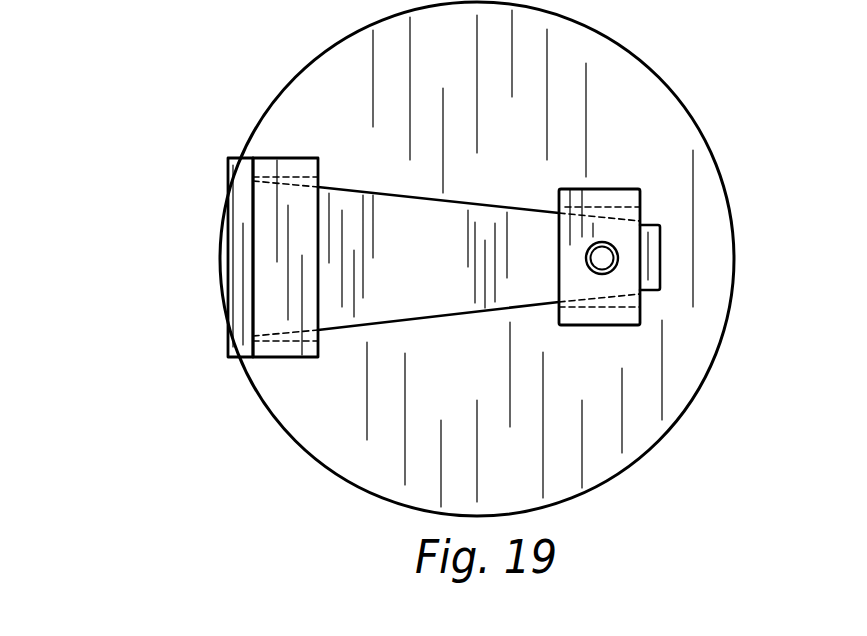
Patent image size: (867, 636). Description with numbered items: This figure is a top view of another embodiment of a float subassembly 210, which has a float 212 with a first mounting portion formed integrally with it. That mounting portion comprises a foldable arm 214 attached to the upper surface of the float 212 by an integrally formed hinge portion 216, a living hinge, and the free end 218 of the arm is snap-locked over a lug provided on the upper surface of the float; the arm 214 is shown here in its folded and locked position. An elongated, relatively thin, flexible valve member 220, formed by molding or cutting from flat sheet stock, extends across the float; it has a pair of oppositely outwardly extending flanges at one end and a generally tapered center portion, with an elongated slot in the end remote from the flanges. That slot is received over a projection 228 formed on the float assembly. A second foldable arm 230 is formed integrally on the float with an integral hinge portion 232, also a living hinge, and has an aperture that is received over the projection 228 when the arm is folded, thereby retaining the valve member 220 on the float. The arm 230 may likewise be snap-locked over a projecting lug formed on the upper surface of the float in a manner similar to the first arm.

The float subassembly 210 is at (117, 168).
The float 212 is at (657, 447).
The foldable arm 214 is at (253, 265).
The hinge portion 216 is at (293, 158).
The free end 218 is at (277, 360).
The valve member 220 is at (393, 195).
The projection 228 is at (604, 258).
The foldable arm 230 is at (641, 201).
The hinge portion 232 is at (605, 189).